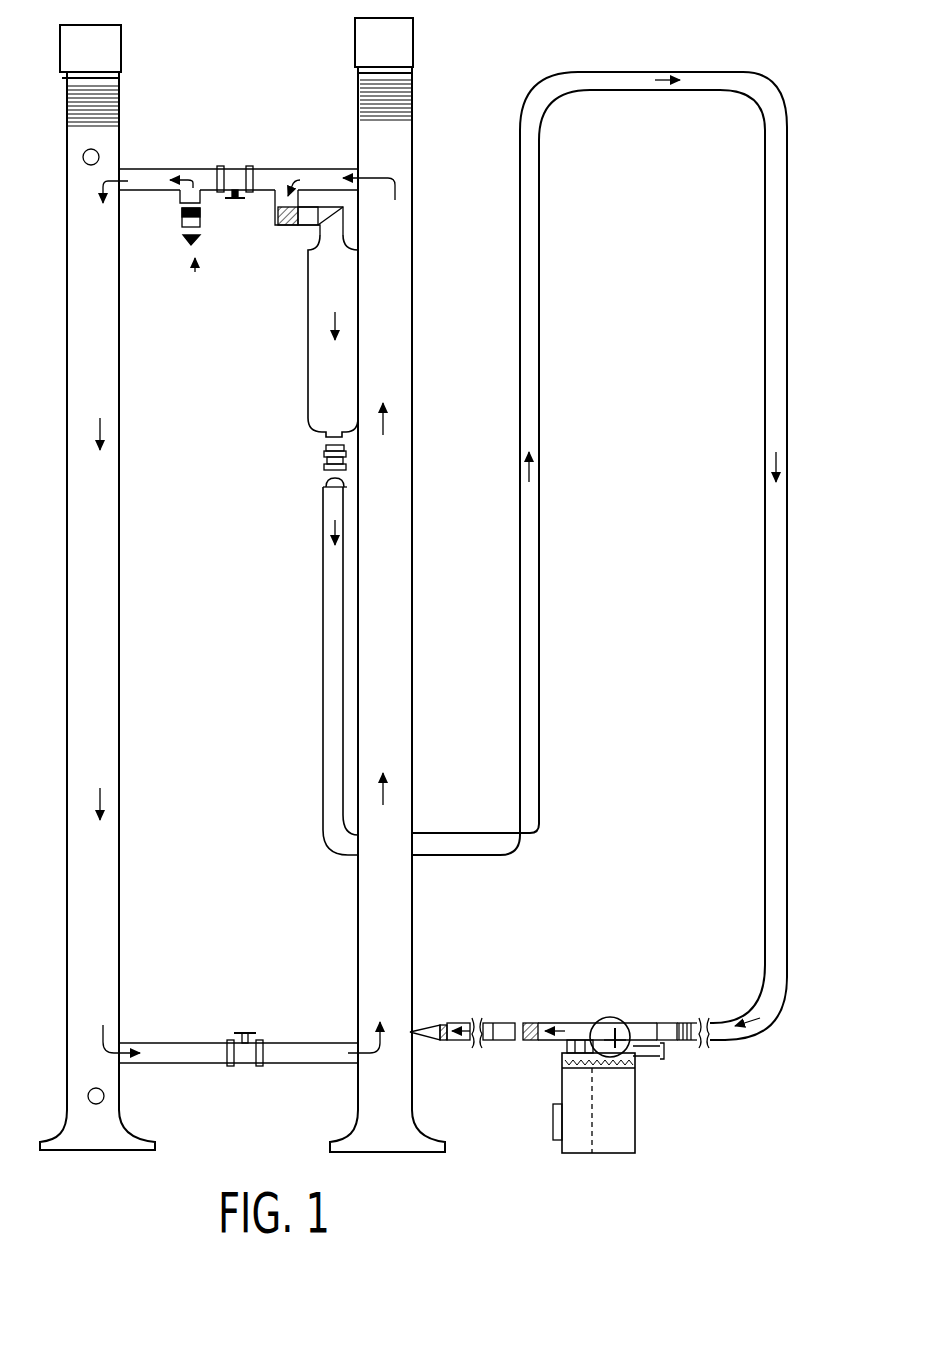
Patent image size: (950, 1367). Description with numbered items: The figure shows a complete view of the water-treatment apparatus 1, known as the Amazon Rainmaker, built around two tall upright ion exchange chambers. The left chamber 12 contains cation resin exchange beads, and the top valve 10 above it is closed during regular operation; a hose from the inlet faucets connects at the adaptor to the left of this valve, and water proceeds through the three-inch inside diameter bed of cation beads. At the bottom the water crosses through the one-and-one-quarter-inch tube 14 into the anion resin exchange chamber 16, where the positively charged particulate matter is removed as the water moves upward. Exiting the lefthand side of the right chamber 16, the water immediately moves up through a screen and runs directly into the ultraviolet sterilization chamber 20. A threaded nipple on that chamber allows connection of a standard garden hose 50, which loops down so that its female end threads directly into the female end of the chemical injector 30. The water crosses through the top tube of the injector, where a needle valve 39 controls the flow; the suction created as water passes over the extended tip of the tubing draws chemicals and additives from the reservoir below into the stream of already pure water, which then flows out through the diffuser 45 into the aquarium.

The heat transfer apparatus 1 is at (60, 42).
The top valve 10 is at (236, 166).
The left chamber 12 is at (124, 607).
The tube 14 is at (314, 1067).
The anion resin exchange chamber 16 is at (416, 410).
The ultraviolet sterilization chamber 20 is at (308, 373).
The chemical injector 30 is at (609, 1018).
The needle valve 39 is at (680, 1044).
The diffuser 45 is at (436, 1022).
The standard garden hose 50 is at (542, 535).